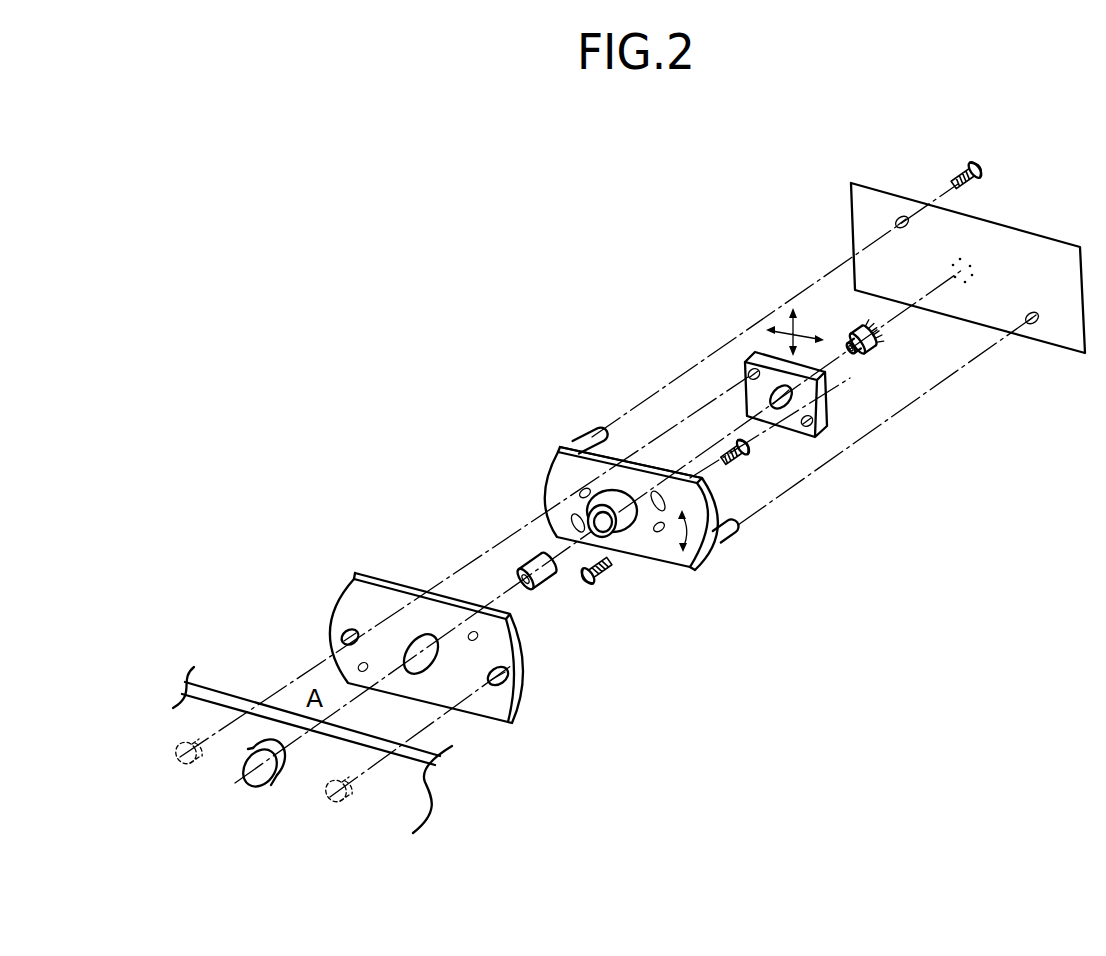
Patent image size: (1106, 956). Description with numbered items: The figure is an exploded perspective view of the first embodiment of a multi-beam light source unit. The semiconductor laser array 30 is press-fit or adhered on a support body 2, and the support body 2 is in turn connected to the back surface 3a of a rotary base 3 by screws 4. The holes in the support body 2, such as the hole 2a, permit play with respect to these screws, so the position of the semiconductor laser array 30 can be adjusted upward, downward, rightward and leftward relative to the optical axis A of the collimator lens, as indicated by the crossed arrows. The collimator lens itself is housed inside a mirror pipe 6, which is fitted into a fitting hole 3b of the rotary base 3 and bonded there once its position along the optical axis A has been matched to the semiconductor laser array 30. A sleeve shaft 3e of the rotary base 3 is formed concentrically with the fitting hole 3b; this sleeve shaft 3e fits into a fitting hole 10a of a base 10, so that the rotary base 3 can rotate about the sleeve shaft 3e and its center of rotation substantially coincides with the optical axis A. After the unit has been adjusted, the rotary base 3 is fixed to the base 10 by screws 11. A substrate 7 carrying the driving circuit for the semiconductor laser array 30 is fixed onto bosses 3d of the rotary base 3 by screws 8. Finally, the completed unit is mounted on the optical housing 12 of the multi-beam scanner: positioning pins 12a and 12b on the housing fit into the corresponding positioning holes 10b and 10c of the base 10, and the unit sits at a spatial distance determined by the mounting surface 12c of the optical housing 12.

The support body 2 is at (818, 434).
The screw hole of fixing block 2a is at (812, 418).
The rotary base 3 is at (681, 566).
The back surface 3a is at (653, 462).
The fitting hole 3b is at (617, 533).
The bosses 3d is at (728, 543).
The sleeve shaft 3e is at (612, 498).
The screw 4 is at (589, 585).
The mirror pipe 6 is at (540, 560).
The substrate 7 is at (1005, 241).
The screws 8 is at (968, 164).
The base 10 is at (525, 690).
The fitting hole 10a is at (413, 647).
The positioning hole 10b is at (508, 682).
The positioning hole 10c is at (342, 630).
The screws 11 is at (748, 452).
The optical housing 12 is at (407, 800).
The positioning pin 12a is at (349, 793).
The positioning pin 12b is at (203, 756).
The mounting surface 12c is at (288, 707).
The semiconductor laser array 30 is at (880, 346).